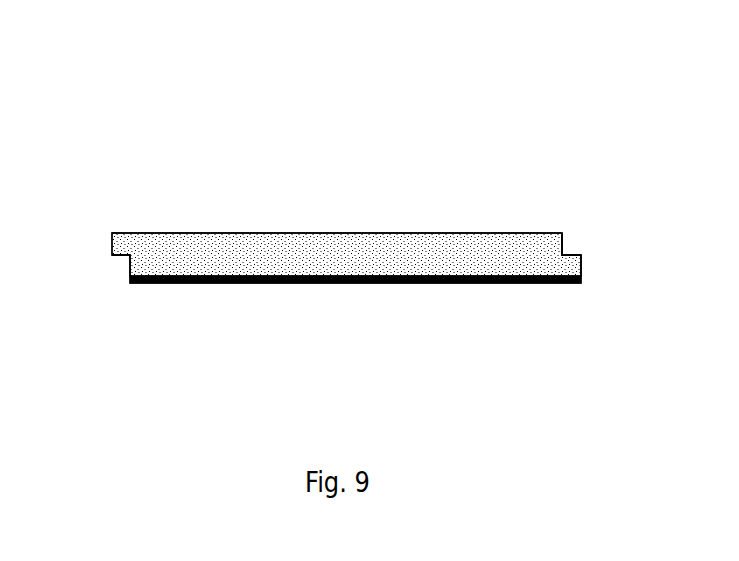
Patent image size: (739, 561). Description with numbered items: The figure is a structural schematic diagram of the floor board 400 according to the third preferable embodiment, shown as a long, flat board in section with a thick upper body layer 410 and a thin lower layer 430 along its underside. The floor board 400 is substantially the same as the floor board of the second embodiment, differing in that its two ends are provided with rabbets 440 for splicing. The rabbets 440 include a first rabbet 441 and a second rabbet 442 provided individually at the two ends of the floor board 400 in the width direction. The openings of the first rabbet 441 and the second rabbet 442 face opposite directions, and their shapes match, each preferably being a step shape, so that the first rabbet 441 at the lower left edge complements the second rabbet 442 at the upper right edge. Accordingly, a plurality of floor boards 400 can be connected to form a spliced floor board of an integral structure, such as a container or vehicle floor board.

The floor board 400 is at (136, 65).
The substrate layer 410 is at (194, 243).
The bottom layer 430 is at (323, 282).
The rabbets 440 is at (346, 244).
The first rabbet 441 is at (119, 258).
The second rabbet 442 is at (563, 235).